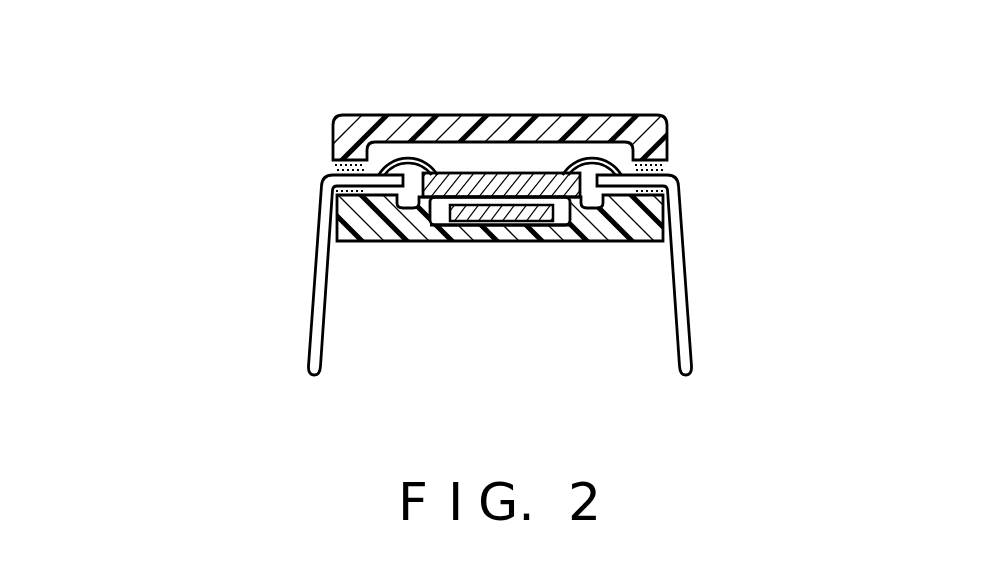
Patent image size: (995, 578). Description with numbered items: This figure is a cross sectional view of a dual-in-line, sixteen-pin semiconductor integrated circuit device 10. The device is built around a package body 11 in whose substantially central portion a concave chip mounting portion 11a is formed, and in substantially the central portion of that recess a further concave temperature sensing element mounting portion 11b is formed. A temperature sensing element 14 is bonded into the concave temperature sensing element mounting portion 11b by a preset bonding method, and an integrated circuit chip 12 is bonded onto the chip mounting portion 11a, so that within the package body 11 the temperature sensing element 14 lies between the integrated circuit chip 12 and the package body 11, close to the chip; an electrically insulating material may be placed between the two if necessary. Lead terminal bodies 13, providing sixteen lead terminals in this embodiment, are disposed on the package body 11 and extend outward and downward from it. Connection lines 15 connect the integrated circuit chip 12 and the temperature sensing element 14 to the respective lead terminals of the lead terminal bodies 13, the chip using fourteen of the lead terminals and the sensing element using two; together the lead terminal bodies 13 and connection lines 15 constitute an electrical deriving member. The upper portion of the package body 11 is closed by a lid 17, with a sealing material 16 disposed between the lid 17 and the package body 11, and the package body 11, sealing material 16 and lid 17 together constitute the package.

The semiconductor integrated circuit device 10 is at (659, 114).
The package body 11 is at (580, 242).
The chip mounting portion 11a is at (406, 200).
The temperature sensing element mounting portion 11b is at (544, 225).
The integrated circuit chip 12 is at (536, 173).
The lead terminal bodies 13 is at (315, 279).
The temperature sensing element 14 is at (507, 221).
The connection lines 15 is at (407, 160).
The sealing material 16 is at (333, 168).
The lid 17 is at (481, 115).